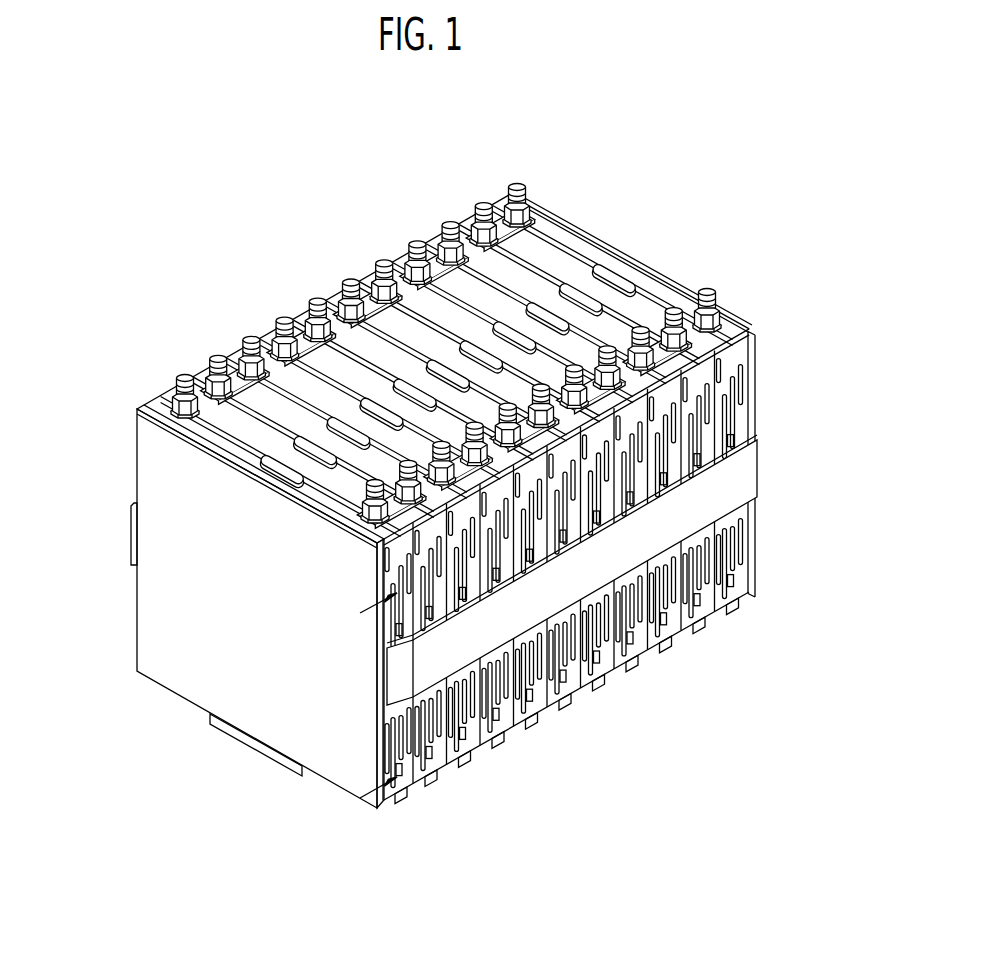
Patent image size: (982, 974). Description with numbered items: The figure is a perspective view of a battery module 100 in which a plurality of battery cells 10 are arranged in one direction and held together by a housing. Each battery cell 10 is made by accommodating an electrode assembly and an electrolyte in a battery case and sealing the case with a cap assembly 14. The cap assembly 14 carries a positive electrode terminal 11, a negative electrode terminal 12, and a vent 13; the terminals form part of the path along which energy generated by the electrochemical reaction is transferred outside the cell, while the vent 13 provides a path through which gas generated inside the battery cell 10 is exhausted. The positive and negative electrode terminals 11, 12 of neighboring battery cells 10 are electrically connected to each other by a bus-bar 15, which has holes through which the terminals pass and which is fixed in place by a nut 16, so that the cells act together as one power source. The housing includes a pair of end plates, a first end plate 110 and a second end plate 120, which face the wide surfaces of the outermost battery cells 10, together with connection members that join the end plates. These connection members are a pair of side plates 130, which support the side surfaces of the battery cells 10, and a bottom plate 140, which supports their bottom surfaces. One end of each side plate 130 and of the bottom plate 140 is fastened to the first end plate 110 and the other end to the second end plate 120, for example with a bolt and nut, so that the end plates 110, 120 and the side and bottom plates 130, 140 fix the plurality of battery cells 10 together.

The battery module 100 is at (442, 446).
The battery cell 10 is at (745, 548).
The positive electrode terminal 11 is at (516, 184).
The negative electrode terminal 12 is at (707, 288).
The vent 13 is at (613, 285).
The cap assembly 14 is at (567, 247).
The bus-bar 15 is at (237, 367).
The nut 16 is at (270, 333).
The first end plate 110 is at (165, 615).
The second end plate 120 is at (762, 521).
The side plate 130 is at (128, 535).
The bottom plate 140 is at (250, 745).